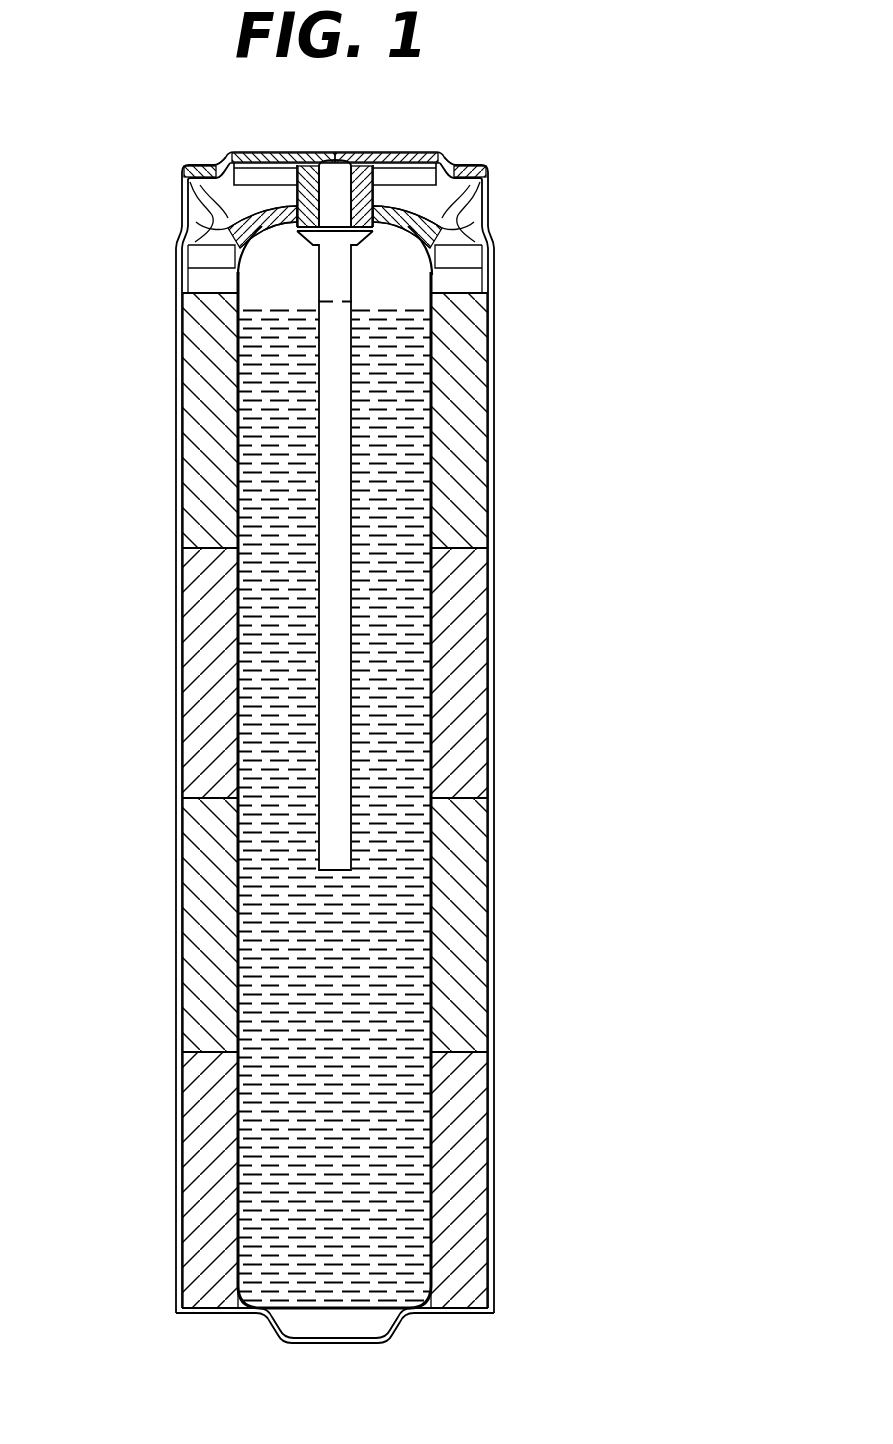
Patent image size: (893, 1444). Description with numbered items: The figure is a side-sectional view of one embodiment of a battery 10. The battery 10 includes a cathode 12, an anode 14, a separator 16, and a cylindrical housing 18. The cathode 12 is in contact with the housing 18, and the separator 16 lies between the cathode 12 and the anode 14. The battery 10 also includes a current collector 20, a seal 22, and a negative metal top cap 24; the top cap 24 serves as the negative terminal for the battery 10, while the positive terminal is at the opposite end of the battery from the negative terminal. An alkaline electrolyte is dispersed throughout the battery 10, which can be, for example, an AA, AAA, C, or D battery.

The battery 10 is at (618, 247).
The cathode 12 is at (477, 395).
The anode 14 is at (398, 900).
The separator 16 is at (238, 723).
The cylindrical housing 18 is at (177, 508).
The current collector 20 is at (338, 670).
The seal 22 is at (230, 252).
The negative metal top cap 24 is at (438, 152).